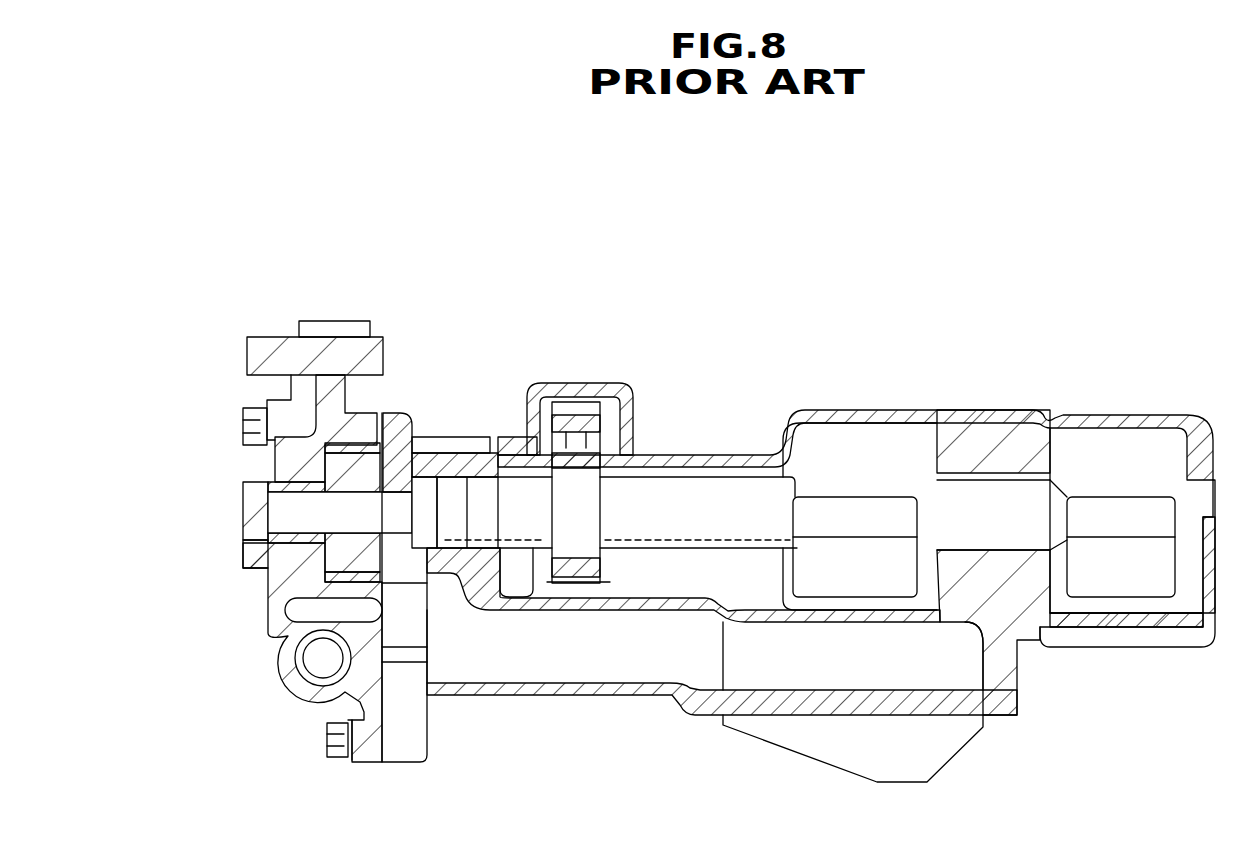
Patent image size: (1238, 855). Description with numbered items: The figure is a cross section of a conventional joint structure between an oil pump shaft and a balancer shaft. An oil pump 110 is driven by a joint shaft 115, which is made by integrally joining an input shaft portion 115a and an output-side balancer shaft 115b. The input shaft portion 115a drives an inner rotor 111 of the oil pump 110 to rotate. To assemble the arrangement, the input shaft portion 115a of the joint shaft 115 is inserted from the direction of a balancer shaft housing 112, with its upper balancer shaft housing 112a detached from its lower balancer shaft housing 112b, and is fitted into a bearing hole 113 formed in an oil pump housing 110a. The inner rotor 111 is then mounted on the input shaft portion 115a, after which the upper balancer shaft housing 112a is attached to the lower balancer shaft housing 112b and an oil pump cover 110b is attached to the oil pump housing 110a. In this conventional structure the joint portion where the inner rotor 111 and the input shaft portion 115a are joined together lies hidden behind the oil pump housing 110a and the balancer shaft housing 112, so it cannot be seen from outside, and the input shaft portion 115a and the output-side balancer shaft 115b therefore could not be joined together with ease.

The oil pump 110 is at (346, 295).
The oil pump housing 110a is at (397, 430).
The oil pump cover 110b is at (282, 352).
The inner rotor 111 is at (357, 466).
The balancer shaft housing 112 is at (1022, 343).
The upper balancer shaft housing 112a is at (853, 410).
The lower balancer shaft housing 112b is at (990, 427).
The bearing hole 113 is at (368, 502).
The joint shaft 115 is at (663, 290).
The input shaft portion 115a is at (405, 452).
The output-side balancer shaft 115b is at (683, 493).